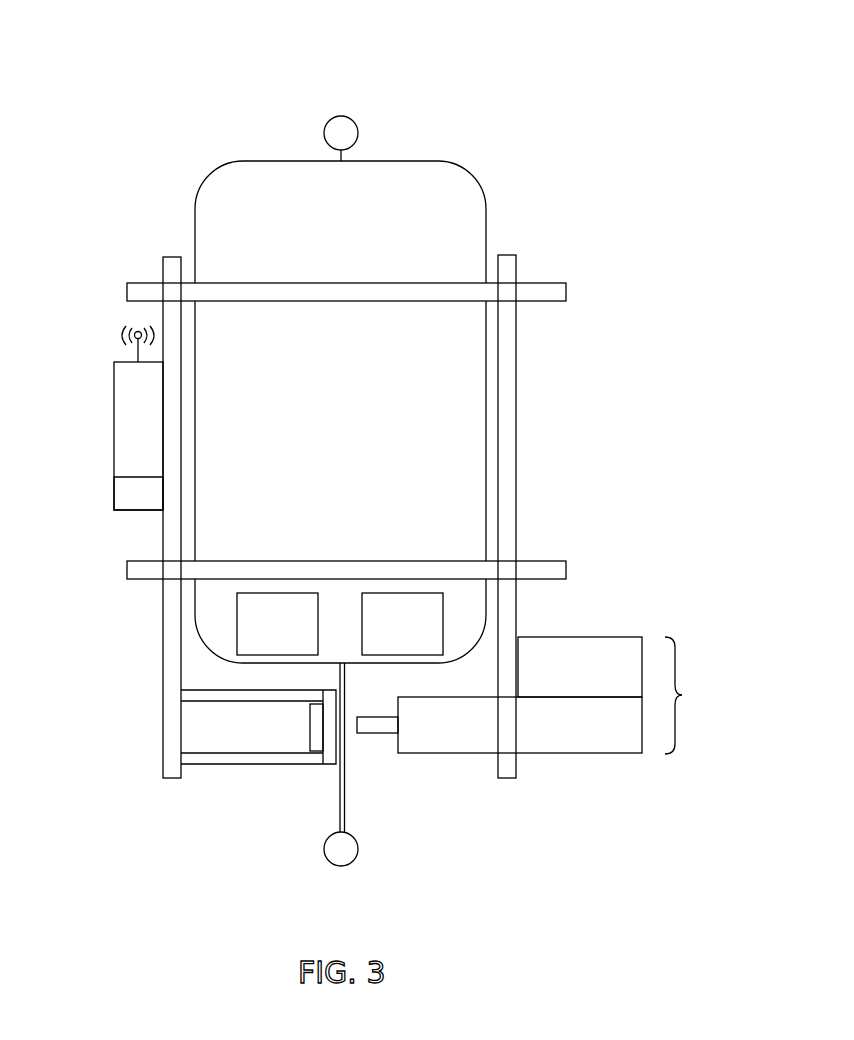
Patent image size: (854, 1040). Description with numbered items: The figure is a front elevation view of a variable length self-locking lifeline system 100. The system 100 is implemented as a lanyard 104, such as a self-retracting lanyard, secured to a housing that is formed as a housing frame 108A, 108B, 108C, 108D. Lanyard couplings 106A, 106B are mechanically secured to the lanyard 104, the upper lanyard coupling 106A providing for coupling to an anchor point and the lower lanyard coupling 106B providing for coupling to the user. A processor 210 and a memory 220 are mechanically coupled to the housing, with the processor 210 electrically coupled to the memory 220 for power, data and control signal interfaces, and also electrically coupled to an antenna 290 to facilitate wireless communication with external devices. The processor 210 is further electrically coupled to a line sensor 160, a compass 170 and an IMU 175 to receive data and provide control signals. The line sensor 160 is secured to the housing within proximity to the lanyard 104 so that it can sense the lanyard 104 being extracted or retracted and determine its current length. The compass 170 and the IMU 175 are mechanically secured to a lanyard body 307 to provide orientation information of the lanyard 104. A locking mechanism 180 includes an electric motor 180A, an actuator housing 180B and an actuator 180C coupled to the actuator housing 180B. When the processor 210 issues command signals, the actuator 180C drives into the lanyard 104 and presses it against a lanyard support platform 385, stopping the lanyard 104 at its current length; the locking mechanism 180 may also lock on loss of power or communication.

The variable length self-locking lifeline system 100 is at (510, 67).
The lanyard 104 is at (344, 818).
The lanyard coupling 106A is at (339, 115).
The lanyard coupling 106B is at (341, 867).
The housing frame 108A is at (170, 257).
The housing frame 108B is at (127, 293).
The housing frame 108C is at (127, 570).
The housing frame 108D is at (506, 255).
The line sensor 160 is at (312, 740).
The compass 170 is at (299, 637).
The IMU 175 is at (424, 637).
The locking mechanism 180 is at (697, 695).
The electric motor 180A is at (580, 637).
The actuator housing 180B is at (578, 754).
The actuator 180C is at (379, 733).
The processor 210 is at (114, 419).
The memory 220 is at (114, 493).
The antenna 290 is at (121, 336).
The lanyard body 307 is at (469, 172).
The lanyard support platform 385 is at (328, 764).